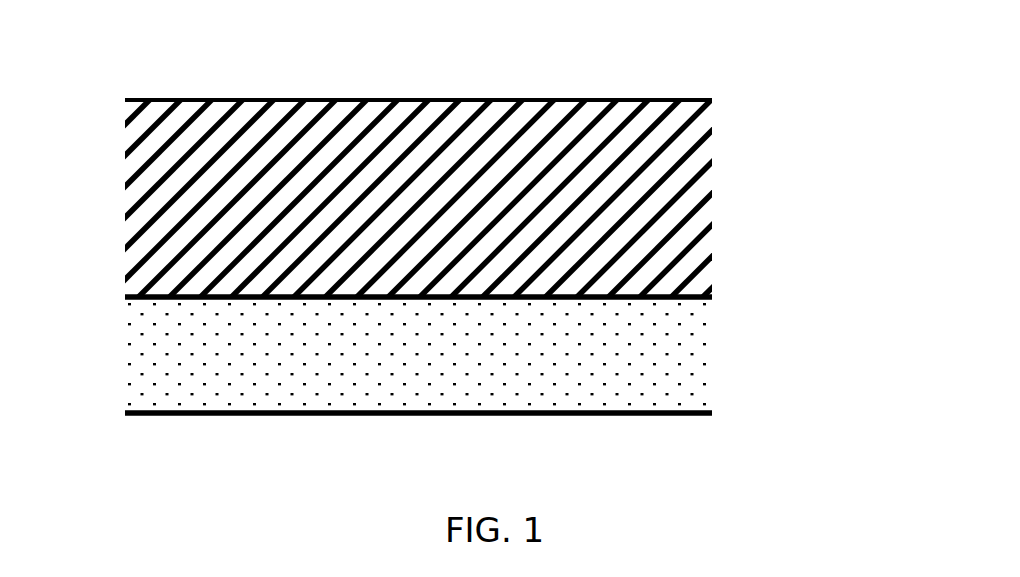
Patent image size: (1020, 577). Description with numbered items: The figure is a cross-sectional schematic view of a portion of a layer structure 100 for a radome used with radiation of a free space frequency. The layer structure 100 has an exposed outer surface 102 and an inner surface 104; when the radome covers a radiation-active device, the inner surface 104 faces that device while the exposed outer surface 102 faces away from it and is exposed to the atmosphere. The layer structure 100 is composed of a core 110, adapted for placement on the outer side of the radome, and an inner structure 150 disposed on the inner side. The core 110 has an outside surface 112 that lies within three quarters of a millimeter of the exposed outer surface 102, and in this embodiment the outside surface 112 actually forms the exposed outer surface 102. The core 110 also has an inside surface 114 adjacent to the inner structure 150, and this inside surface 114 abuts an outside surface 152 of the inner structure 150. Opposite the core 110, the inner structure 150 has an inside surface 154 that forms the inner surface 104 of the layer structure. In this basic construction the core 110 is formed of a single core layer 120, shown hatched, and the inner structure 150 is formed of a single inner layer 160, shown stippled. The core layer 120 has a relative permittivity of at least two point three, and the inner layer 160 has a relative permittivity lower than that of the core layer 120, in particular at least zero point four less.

The layer structure 100 is at (465, 252).
The exposed outer surface 102 is at (363, 65).
The inner surface 104 is at (373, 448).
The core 110 is at (465, 188).
The outside surface of the core 112 is at (254, 82).
The inside surface of the core 114 is at (185, 312).
The core layer 120 is at (478, 125).
The inner structure 150 is at (446, 360).
The outside surface of the inner structure 152 is at (179, 285).
The inside surface of the inner structure 154 is at (239, 428).
The inner layer 160 is at (508, 380).